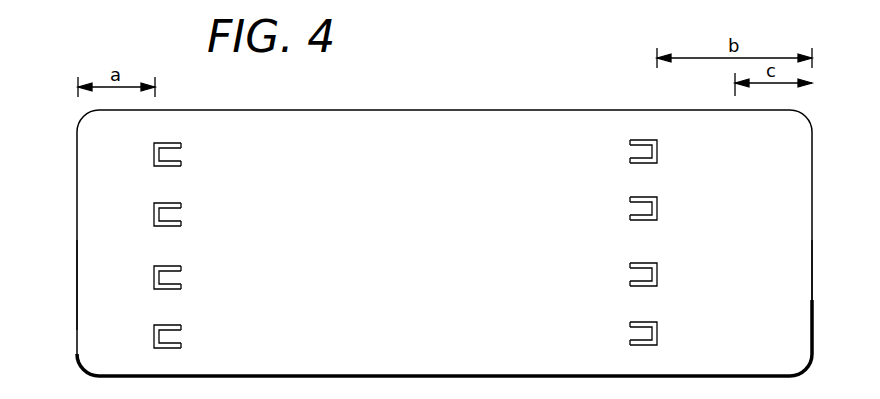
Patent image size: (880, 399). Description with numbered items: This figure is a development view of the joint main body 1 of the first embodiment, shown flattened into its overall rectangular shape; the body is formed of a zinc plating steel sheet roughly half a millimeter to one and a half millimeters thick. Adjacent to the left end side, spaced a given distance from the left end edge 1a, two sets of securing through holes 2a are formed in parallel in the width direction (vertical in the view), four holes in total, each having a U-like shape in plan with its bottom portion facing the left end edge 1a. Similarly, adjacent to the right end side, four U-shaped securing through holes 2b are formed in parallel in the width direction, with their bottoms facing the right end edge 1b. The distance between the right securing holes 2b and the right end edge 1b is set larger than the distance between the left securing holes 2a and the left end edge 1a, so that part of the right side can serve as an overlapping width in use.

The joint main body 1 is at (390, 124).
The left end edge 1a is at (77, 325).
The right end edge 1b is at (813, 223).
The securing through holes 2a is at (154, 151).
The securing through holes 2b is at (657, 205).